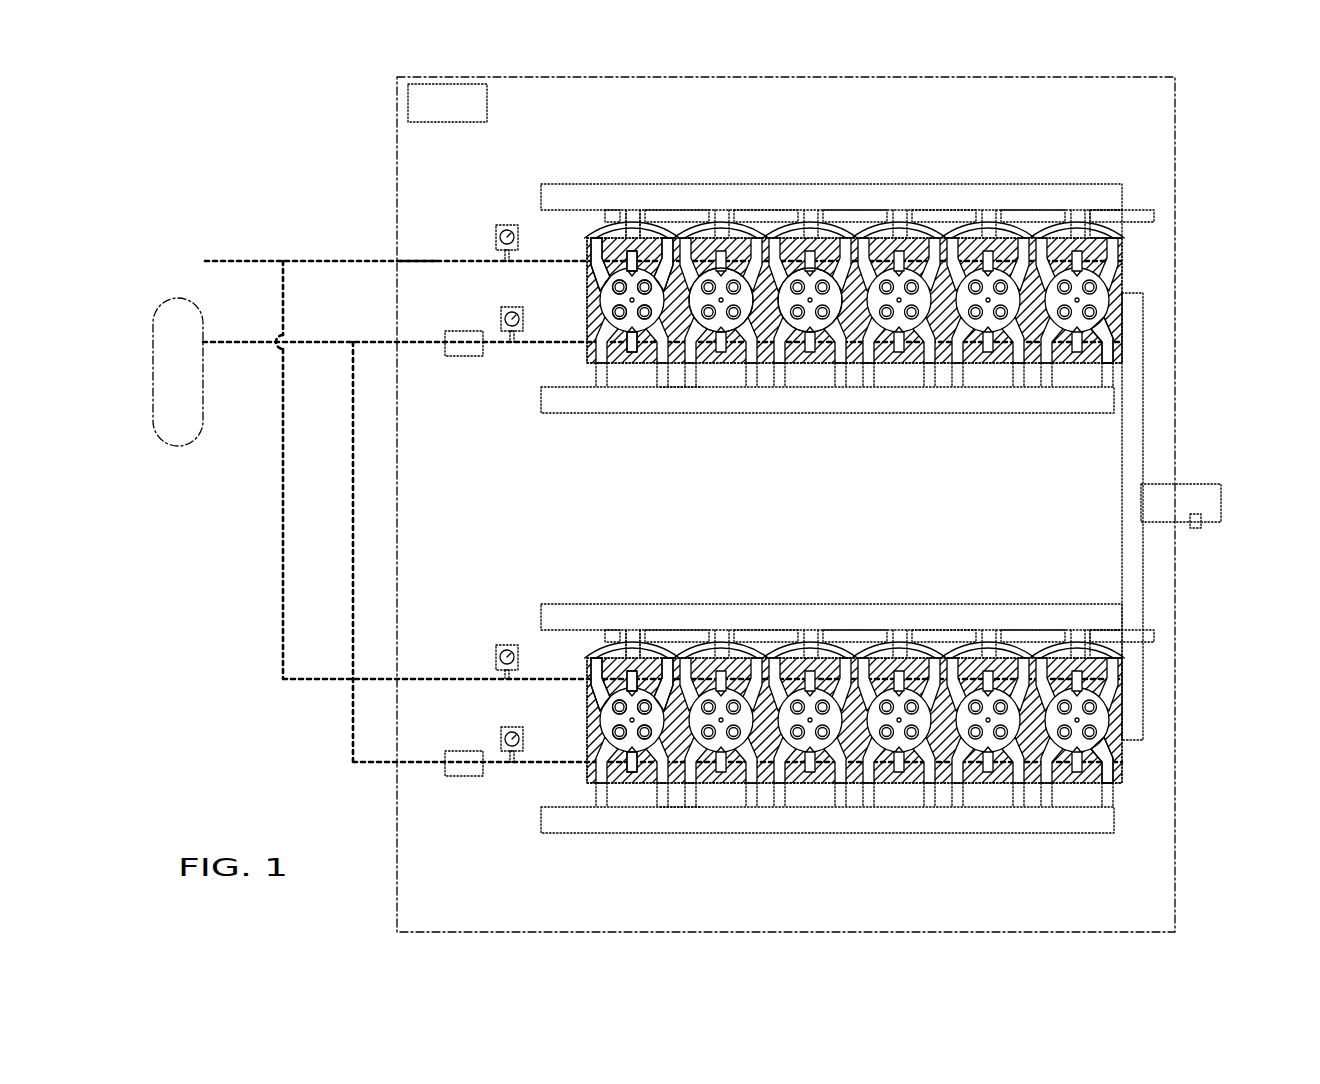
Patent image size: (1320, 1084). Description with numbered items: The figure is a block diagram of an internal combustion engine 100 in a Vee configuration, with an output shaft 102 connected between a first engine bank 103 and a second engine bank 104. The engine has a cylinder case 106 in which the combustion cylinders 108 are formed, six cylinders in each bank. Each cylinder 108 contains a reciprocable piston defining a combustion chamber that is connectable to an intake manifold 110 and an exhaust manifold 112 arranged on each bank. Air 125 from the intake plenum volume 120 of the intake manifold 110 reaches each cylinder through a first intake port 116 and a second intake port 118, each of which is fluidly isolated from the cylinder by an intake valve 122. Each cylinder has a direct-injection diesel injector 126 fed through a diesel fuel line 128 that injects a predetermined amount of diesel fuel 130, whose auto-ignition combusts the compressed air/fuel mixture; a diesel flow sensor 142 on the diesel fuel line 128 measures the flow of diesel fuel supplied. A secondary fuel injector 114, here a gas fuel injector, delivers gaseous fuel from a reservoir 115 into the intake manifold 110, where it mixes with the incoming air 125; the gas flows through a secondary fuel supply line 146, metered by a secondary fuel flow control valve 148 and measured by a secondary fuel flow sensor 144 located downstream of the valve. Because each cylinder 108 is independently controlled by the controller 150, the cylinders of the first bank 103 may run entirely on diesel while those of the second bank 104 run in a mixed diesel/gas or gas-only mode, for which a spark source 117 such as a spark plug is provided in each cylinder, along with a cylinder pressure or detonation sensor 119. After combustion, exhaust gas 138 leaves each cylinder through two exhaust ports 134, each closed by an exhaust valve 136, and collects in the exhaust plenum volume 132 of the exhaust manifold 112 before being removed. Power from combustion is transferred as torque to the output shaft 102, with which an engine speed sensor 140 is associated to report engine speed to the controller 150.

The internal combustion engine 100 is at (370, 142).
The output shaft 102 is at (1212, 484).
The first engine bank 103 is at (1190, 214).
The second engine bank 104 is at (1190, 690).
The cylinder case 106 is at (587, 360).
The combustion cylinder 108 is at (811, 258).
The intake manifold 110 is at (570, 192).
The exhaust manifold 112 is at (677, 400).
The secondary fuel injector 114 is at (1053, 367).
The reservoir 115 is at (178, 372).
The first intake port 116 is at (601, 258).
The spark source 117 is at (765, 317).
The second intake port 118 is at (671, 255).
The detonation sensor 119 is at (812, 312).
The intake plenum volume 120 is at (636, 197).
The intake valve 122 is at (621, 287).
The air 125 is at (541, 197).
The direct-injection diesel injector 126 is at (638, 250).
The diesel fuel line 128 is at (373, 264).
The diesel fuel 130 is at (420, 262).
The exhaust plenum volume 132 is at (857, 413).
The exhaust port 134 is at (601, 374).
The exhaust valve 136 is at (634, 356).
The exhaust gas 138 is at (541, 400).
The engine speed sensor 140 is at (1198, 529).
The diesel flow sensor 142 is at (496, 240).
The secondary fuel flow sensor 144 is at (501, 318).
The secondary fuel supply line 146 is at (373, 340).
The secondary fuel flow control valve 148 is at (447, 333).
The controller 150 is at (430, 117).